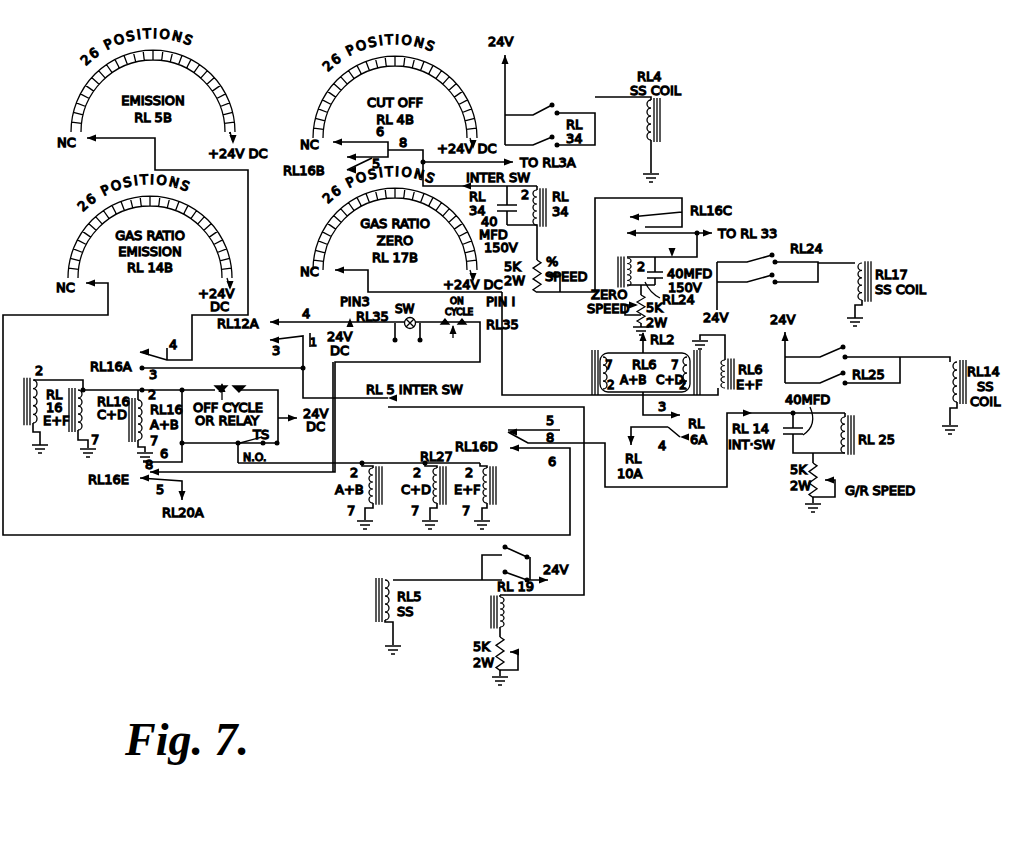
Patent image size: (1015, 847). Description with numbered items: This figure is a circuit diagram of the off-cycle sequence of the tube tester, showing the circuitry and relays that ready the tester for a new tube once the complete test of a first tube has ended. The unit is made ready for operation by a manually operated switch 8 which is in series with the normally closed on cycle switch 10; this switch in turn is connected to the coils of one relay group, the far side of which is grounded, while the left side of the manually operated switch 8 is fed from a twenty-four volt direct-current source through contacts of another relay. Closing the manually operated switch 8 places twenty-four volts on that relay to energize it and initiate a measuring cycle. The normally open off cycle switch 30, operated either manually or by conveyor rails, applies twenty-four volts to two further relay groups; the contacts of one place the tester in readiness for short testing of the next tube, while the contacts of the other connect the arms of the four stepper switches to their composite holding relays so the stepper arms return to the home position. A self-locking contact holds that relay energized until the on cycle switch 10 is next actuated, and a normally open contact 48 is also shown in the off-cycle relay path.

The manually operated switch 8 is at (422, 318).
The on cycle switch 10 is at (456, 320).
The off cycle switch 30 is at (226, 386).
The normally open contact 48 is at (282, 440).